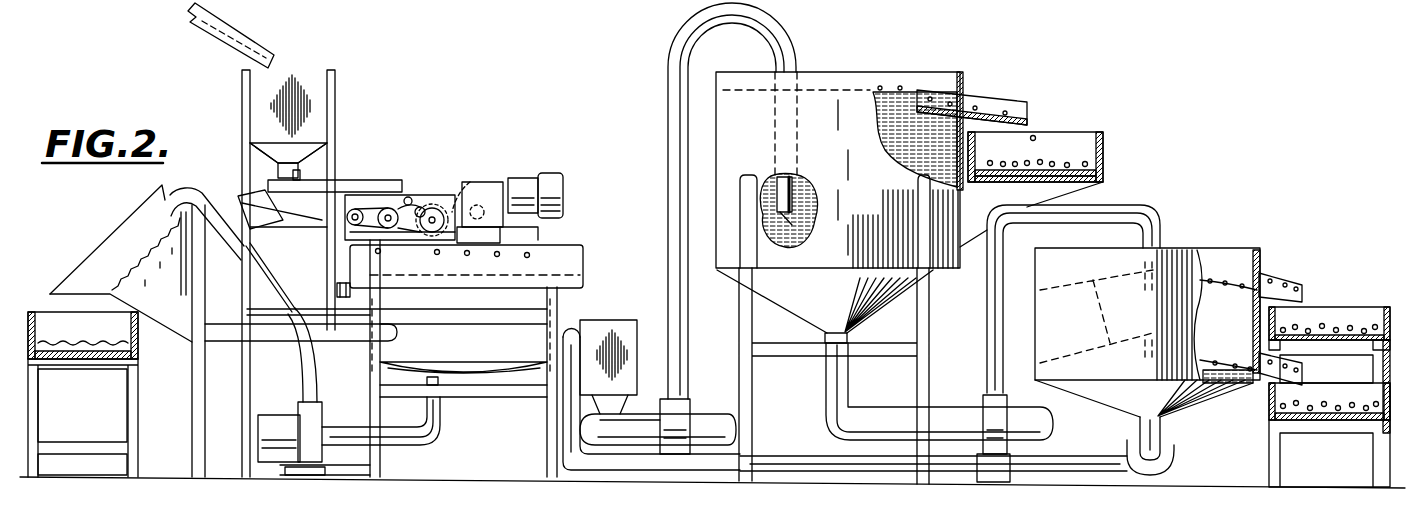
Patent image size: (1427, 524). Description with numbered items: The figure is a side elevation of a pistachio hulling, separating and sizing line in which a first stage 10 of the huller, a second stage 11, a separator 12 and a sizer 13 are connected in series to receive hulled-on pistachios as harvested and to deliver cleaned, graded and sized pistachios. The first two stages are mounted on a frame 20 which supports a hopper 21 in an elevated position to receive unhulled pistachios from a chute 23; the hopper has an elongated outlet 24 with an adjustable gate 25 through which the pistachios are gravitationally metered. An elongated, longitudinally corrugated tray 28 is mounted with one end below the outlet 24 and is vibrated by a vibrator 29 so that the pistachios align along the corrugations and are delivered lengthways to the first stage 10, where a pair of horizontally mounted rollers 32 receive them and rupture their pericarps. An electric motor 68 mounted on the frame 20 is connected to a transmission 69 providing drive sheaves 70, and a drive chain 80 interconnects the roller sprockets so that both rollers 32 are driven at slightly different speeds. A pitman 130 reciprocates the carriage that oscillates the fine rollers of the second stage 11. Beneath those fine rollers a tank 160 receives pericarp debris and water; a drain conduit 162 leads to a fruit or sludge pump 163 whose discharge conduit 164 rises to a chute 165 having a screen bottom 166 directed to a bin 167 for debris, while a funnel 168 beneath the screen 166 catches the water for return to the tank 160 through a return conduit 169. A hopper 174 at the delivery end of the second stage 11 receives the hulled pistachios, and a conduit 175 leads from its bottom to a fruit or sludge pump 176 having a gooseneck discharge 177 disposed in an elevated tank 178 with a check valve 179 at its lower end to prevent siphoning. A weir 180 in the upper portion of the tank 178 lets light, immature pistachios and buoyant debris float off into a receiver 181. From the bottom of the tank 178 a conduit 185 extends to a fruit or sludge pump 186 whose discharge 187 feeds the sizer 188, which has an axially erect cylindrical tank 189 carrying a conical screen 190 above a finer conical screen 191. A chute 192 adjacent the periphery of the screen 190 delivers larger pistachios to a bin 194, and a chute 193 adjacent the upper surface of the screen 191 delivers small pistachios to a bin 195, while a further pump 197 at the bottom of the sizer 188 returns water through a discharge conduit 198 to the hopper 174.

The first stage 10 is at (416, 190).
The second stage 11 is at (585, 246).
The separator 12 is at (840, 68).
The sizer 13 is at (1199, 247).
The frame 20 is at (380, 459).
The hopper 21 is at (310, 107).
The chute 23 is at (237, 33).
The elongated outlet 24 is at (277, 168).
The adjustable gate 25 is at (302, 170).
The elongated tray 28 is at (380, 183).
The vibrator 29 is at (258, 203).
The rollers 32 is at (471, 196).
The electric motor 68 is at (545, 177).
The transmission 69 is at (497, 187).
The drive sheaves 70 is at (505, 225).
The drive chain 80 is at (424, 204).
The pitman 130 is at (340, 285).
The tank 160 is at (480, 355).
The drain conduit 162 is at (438, 425).
The fruit or sludge pump 163 is at (297, 438).
The discharge conduit 164 is at (262, 278).
The chute 165 is at (122, 233).
The screen bottom 166 is at (147, 274).
The bin 167 is at (40, 313).
The funnel 168 is at (163, 328).
The return conduit 169 is at (270, 330).
The hopper 174 is at (602, 328).
The conduit 175 is at (623, 440).
The fruit or sludge pump 176 is at (680, 415).
The gooseneck discharge 177 is at (677, 70).
The elevated tank 178 is at (730, 128).
The check valve 179 is at (783, 228).
The weir 180 is at (912, 90).
The receiver 181 is at (1103, 148).
The conduit 185 is at (837, 415).
The fruit or sludge pump 186 is at (990, 404).
The discharge 187 is at (1143, 217).
The sizer 188 is at (1260, 248).
The cylindrical tank 189 is at (1172, 376).
The conical screen 190 is at (1228, 284).
The finer conical screen 191 is at (1092, 276).
The chute 192 is at (1287, 288).
The chute 193 is at (1264, 374).
The bin 194 is at (1334, 308).
The bin 195 is at (1340, 392).
The pump 197 is at (1125, 443).
The discharge conduit 198 is at (787, 464).